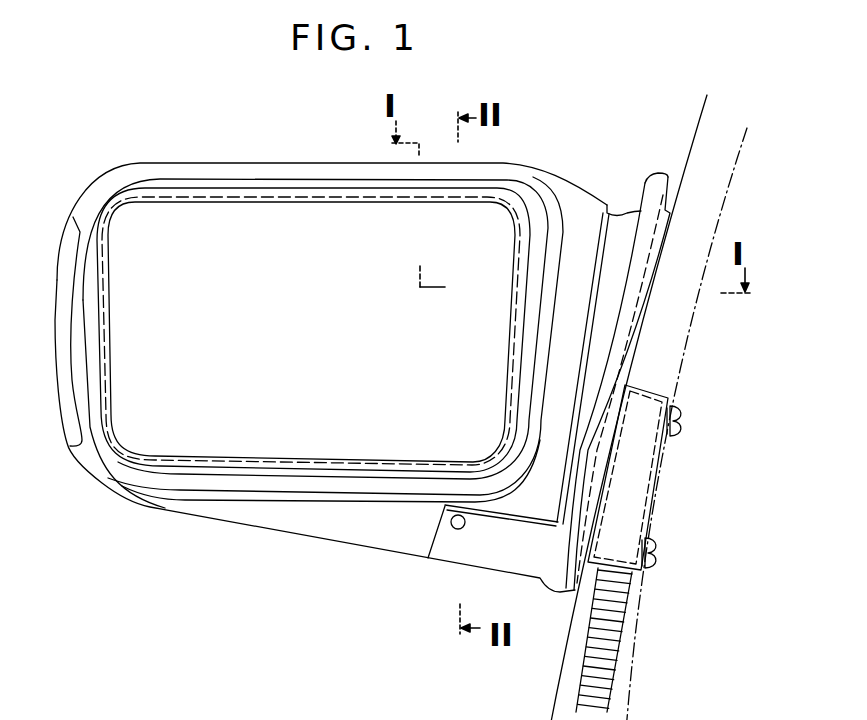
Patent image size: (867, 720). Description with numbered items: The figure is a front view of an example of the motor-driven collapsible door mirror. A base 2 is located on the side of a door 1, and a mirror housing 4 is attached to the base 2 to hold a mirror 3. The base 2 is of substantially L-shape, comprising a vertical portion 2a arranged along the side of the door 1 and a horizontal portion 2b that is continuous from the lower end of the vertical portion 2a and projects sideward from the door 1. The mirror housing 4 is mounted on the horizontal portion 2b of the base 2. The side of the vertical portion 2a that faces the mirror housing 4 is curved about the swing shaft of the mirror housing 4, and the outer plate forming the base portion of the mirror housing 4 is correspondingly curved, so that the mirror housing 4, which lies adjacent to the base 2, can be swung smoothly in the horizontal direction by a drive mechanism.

The door 1 is at (694, 148).
The base 2 is at (621, 231).
The vertical portion 2a is at (608, 267).
The horizontal portion 2b is at (456, 544).
The mirror 3 is at (190, 210).
The mirror housing 4 is at (96, 198).